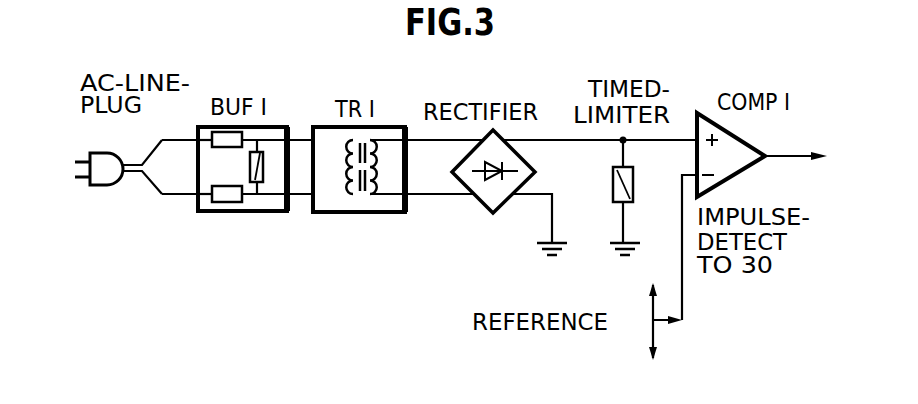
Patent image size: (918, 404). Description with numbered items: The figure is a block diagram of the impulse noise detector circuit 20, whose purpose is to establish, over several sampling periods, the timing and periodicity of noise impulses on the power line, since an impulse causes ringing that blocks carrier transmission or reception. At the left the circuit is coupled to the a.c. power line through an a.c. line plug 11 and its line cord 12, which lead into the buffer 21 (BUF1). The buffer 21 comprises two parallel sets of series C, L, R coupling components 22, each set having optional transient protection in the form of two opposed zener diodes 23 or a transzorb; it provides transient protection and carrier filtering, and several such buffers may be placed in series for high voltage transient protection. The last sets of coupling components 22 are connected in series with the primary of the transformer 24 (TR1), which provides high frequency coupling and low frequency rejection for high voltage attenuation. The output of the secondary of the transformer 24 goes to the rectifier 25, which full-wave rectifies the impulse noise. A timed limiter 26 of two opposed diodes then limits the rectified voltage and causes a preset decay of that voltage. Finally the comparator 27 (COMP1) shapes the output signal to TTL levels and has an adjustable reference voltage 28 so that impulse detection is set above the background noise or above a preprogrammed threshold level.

The AC line plug 11 is at (112, 186).
The line cord 12 is at (178, 160).
The impulse noise detector circuit 20 is at (219, 238).
The buffer 21 is at (198, 212).
The series C, L, R coupling components 22 is at (212, 136).
The opposed zener diodes 23 is at (263, 172).
The transformer 24 is at (392, 213).
The rectifier 25 is at (487, 207).
The timed limiter 26 is at (613, 195).
The comparator 27 is at (752, 143).
The adjustable reference voltage 28 is at (645, 323).